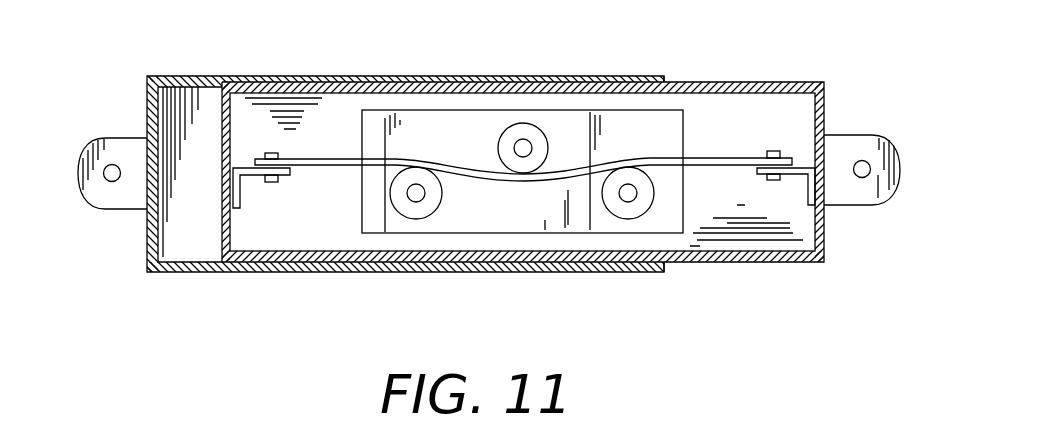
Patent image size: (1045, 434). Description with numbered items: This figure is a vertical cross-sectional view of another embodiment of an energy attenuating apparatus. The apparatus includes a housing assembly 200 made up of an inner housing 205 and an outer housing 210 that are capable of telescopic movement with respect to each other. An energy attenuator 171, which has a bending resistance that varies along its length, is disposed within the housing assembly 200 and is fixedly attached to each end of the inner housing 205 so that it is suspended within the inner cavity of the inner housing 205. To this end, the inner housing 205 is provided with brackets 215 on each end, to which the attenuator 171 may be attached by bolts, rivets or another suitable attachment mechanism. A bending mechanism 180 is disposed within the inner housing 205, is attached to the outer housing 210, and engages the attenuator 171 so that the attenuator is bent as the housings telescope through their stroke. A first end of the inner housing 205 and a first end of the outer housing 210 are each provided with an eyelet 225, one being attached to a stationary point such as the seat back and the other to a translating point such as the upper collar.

The housing assembly 200 is at (200, 67).
The inner housing 205 is at (740, 82).
The outer housing 210 is at (440, 76).
The brackets 215 is at (243, 178).
The eyelet 225 is at (108, 210).
The bending mechanism 180 is at (400, 235).
The energy attenuator 171 is at (718, 166).